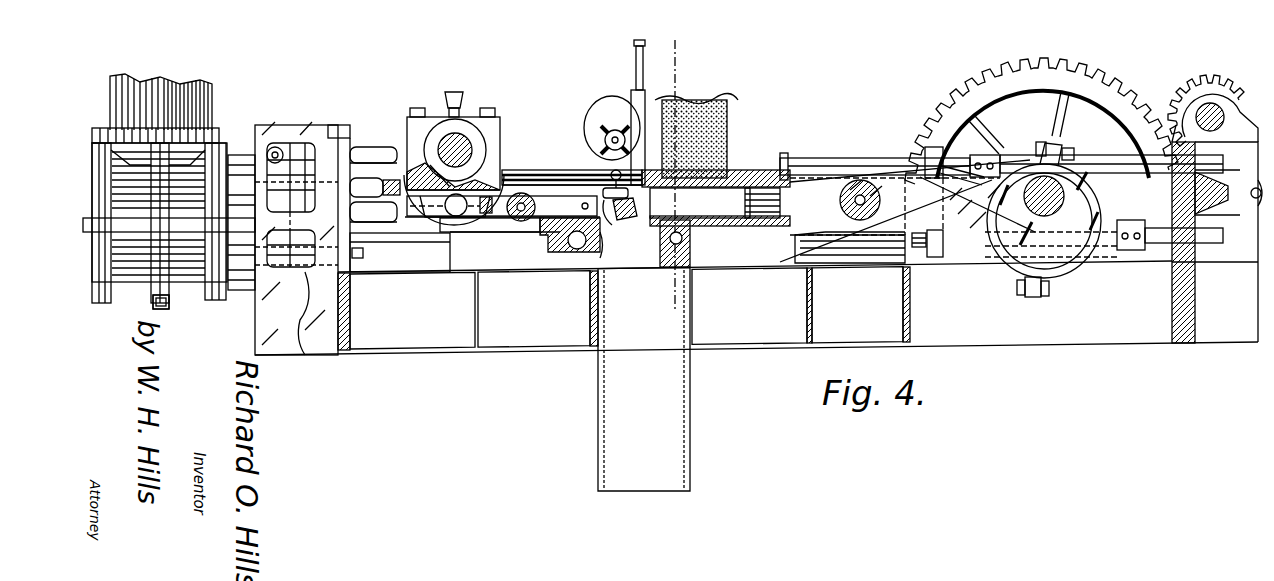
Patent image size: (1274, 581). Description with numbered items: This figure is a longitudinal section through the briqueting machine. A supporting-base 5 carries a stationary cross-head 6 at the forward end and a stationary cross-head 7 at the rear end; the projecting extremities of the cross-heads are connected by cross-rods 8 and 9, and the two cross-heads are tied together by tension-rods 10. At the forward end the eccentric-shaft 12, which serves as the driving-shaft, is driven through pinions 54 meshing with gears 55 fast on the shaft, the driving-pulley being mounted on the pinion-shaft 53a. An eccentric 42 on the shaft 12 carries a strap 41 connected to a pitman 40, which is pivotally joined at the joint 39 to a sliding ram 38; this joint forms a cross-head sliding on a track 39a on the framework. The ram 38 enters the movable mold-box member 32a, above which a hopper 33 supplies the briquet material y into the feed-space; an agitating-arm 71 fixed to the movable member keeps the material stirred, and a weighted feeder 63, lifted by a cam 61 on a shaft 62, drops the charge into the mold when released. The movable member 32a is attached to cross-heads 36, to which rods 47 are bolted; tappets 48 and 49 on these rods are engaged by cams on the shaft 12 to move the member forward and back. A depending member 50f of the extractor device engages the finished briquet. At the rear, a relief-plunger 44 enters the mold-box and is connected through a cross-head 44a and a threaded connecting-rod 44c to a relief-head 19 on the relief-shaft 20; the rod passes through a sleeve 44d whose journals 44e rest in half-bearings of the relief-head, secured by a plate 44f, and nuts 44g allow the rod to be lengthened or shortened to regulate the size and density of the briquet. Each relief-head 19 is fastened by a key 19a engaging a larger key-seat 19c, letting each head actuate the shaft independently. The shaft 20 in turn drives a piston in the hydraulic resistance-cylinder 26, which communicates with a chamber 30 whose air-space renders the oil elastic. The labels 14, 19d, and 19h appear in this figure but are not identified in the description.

The supporting-base 5 is at (756, 308).
The forward cross-head 6 is at (1215, 188).
The rear cross-head 7 is at (312, 125).
The cross-rod 8 is at (1253, 200).
The cross-rod 9 is at (278, 147).
The tension-rods 10 is at (822, 161).
The eccentric-shaft 12 is at (1045, 145).
The standard / support column 14 is at (678, 75).
The relief-head 19 is at (444, 149).
The key 19a is at (440, 195).
The key-seat 19c is at (450, 92).
The bearing bore 19d is at (475, 128).
The bearing cap 19h is at (445, 218).
The relief-shaft 20 is at (468, 138).
The hydraulic resistance-cylinder 26 is at (163, 332).
The chamber 30 is at (169, 191).
The movable mold-box member 32a is at (518, 222).
The hopper 33 is at (720, 100).
The cross-heads 36 is at (930, 147).
The ram 38 is at (758, 180).
The pivot joint 39 is at (865, 180).
The track 39a is at (800, 262).
The pitman 40 is at (907, 211).
The eccentric strap 41 is at (1092, 160).
The eccentric 42 is at (1051, 219).
The relief-plunger 44 is at (552, 182).
The cross-head 44a is at (505, 215).
The threaded connecting-rod 44c is at (490, 214).
The sleeve 44d is at (425, 215).
The journals 44e is at (457, 273).
The plate 44f is at (505, 200).
The nuts 44g is at (392, 160).
The rods 47 is at (1152, 245).
The tappet 48 is at (1118, 245).
The tappets 49 is at (1000, 152).
The depending member 50f is at (612, 222).
The pinion-shaft 53a is at (1210, 103).
The pinions 54 is at (1228, 80).
The gears 55 is at (1028, 60).
The cam 61 is at (612, 128).
The cam shaft 62 is at (590, 204).
The feeder 63 is at (645, 66).
The agitating-arm 71 is at (742, 165).
The briquet material y is at (627, 228).